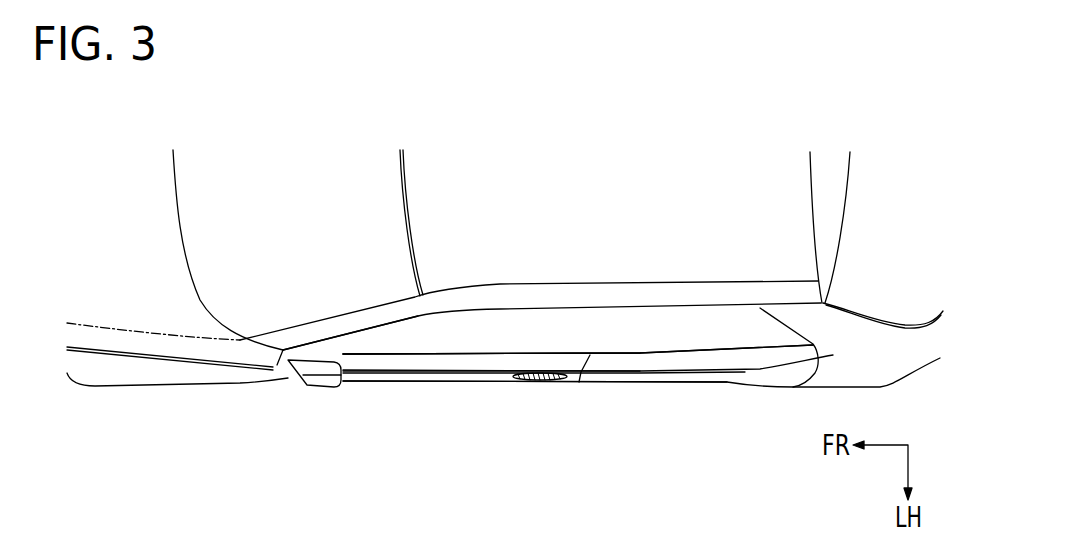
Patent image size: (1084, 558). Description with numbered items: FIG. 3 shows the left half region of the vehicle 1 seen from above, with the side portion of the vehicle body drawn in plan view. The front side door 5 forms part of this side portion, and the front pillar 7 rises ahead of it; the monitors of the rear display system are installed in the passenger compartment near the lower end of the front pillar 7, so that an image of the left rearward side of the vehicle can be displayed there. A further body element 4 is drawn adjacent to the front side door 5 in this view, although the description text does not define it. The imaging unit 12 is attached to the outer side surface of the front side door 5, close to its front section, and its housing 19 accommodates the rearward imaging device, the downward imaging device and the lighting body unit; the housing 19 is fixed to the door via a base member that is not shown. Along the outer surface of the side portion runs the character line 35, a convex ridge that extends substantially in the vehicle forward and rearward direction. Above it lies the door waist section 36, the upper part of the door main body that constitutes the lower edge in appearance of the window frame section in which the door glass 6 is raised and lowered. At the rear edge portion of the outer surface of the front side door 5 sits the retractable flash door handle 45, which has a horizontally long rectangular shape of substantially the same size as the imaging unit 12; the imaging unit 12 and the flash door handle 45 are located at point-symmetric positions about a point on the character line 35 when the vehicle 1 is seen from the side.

The vehicle 1 is at (668, 158).
The front door 4 is at (210, 245).
The front pillar 7 is at (360, 318).
The housing 19 is at (307, 365).
The imaging unit 12 is at (325, 388).
The door waist section 36 is at (423, 356).
The character line 35 is at (452, 374).
The front side door 5 is at (488, 383).
The door glass 6 is at (510, 332).
The flash door handle 45 is at (562, 381).